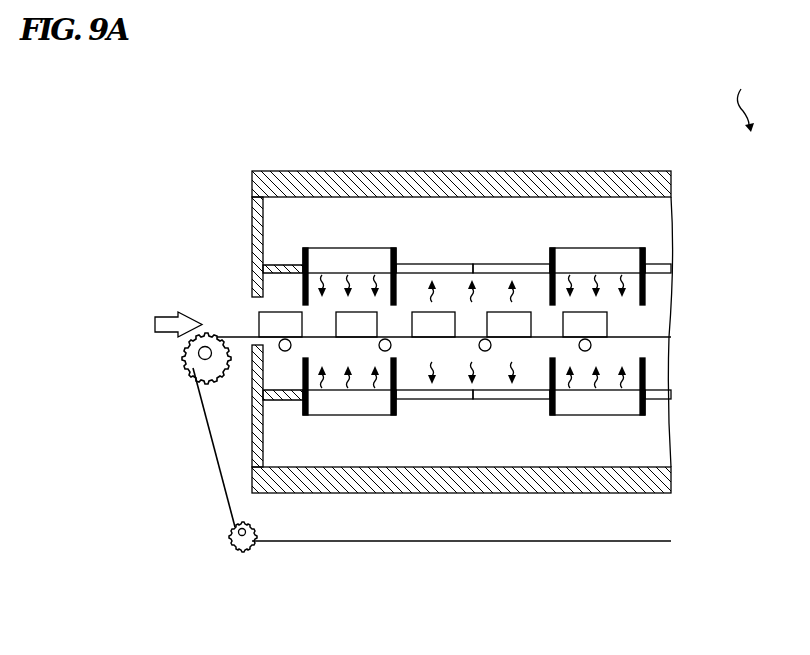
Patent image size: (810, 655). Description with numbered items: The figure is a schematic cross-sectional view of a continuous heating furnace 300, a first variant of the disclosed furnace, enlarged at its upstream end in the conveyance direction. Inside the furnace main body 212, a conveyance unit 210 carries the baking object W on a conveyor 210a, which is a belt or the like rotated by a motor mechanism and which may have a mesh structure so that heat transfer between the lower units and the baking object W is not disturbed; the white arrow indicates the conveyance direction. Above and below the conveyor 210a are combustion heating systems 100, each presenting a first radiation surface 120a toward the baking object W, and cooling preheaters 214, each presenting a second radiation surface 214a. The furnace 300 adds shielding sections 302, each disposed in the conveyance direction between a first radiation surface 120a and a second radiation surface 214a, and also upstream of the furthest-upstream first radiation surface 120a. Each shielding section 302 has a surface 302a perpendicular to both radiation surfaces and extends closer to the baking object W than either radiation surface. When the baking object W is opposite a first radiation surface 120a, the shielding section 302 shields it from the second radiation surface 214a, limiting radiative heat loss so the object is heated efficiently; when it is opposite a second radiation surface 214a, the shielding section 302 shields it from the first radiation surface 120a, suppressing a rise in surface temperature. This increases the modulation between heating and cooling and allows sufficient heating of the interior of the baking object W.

The combustion heating system 100 is at (325, 248).
The first radiation surface 120a is at (358, 277).
The furnace main body 212 is at (252, 171).
The cooling preheater 214 is at (513, 263).
The second radiation surface 214a is at (537, 263).
The conveyance unit 210 is at (399, 442).
The conveyor 210a is at (203, 415).
The continuous heating furnace 300 is at (770, 87).
The shielding section 302 is at (300, 250).
The surface 302a is at (305, 305).
The baking object W is at (607, 327).